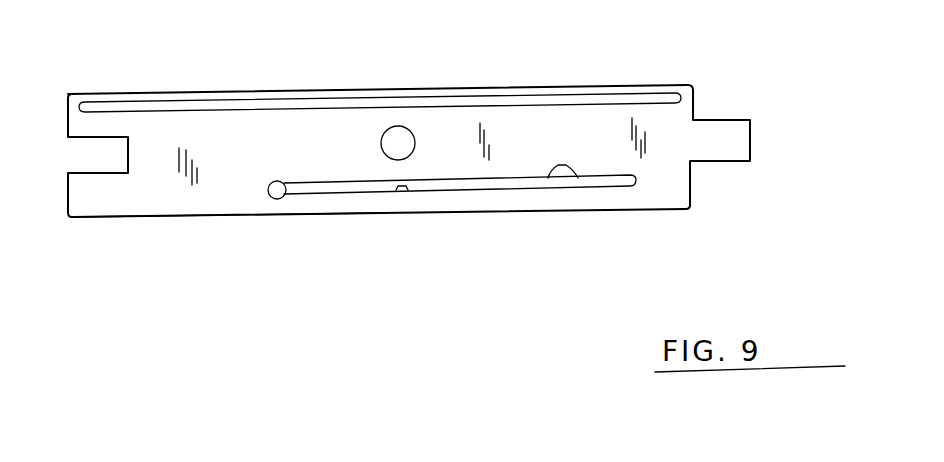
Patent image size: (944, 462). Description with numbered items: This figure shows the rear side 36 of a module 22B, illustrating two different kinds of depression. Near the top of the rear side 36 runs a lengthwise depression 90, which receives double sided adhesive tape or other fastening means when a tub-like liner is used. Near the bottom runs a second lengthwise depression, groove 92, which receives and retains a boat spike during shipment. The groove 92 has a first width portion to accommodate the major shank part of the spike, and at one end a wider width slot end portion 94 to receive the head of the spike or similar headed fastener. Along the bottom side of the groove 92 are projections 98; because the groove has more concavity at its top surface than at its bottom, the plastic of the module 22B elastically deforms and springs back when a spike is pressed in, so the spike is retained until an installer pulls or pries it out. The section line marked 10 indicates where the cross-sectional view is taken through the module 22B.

The module 22B is at (606, 65).
The lengthwise depression 90 is at (203, 100).
The groove 92 is at (498, 191).
The wider width slot end portion 94 is at (284, 202).
The projections 98 is at (570, 168).
The rear side 36 is at (147, 188).
The section line 10- 10 is at (397, 67).